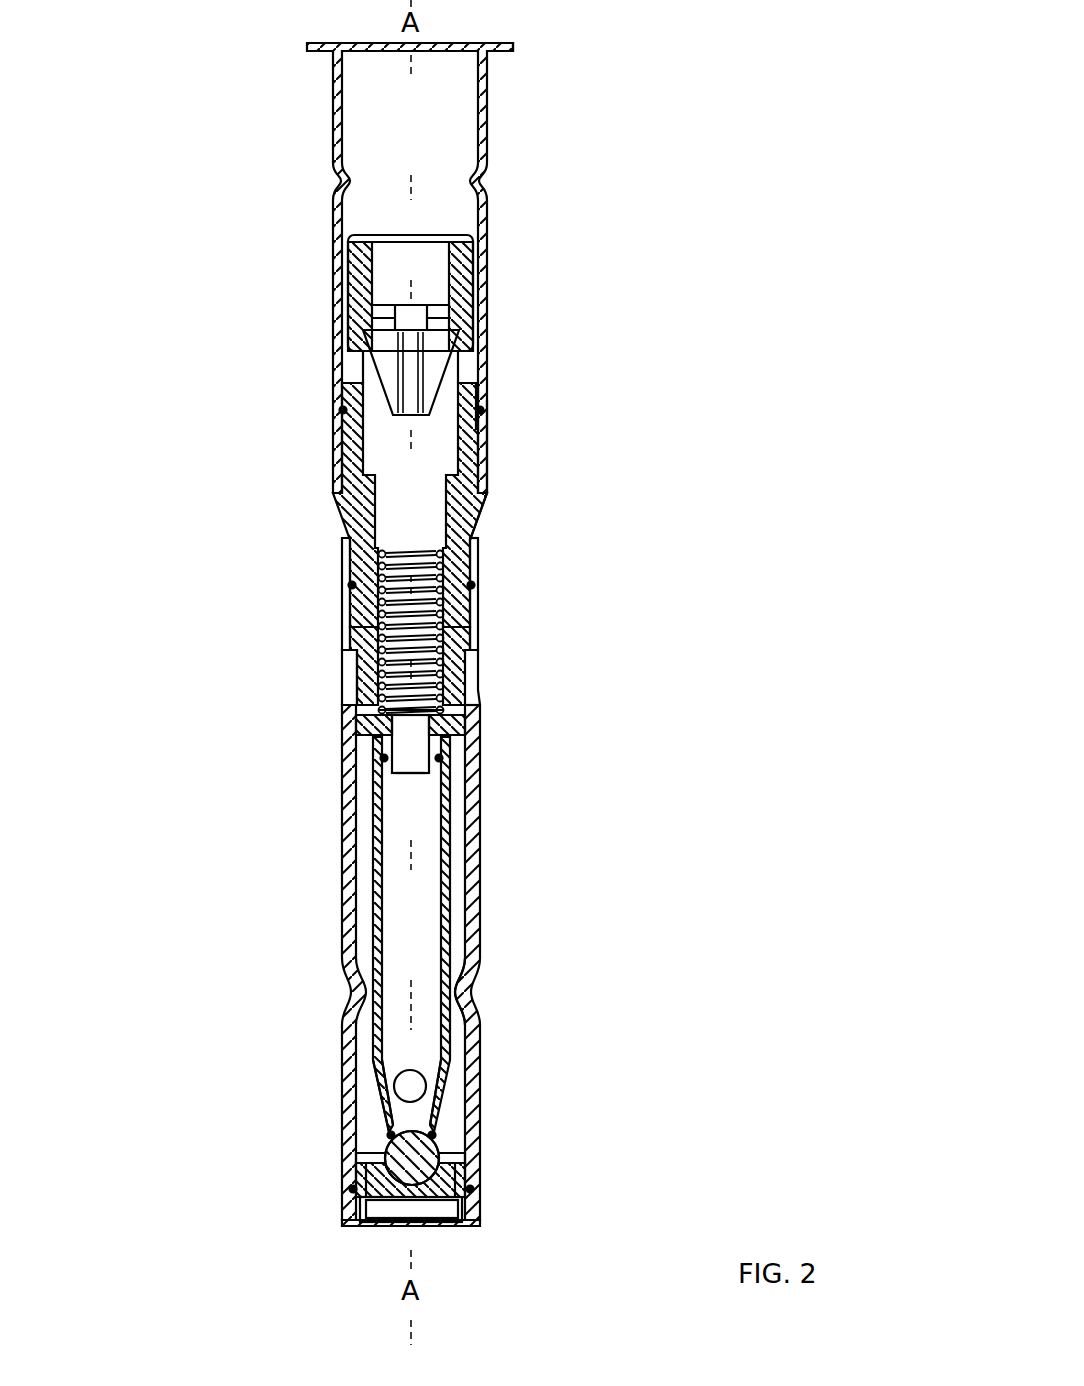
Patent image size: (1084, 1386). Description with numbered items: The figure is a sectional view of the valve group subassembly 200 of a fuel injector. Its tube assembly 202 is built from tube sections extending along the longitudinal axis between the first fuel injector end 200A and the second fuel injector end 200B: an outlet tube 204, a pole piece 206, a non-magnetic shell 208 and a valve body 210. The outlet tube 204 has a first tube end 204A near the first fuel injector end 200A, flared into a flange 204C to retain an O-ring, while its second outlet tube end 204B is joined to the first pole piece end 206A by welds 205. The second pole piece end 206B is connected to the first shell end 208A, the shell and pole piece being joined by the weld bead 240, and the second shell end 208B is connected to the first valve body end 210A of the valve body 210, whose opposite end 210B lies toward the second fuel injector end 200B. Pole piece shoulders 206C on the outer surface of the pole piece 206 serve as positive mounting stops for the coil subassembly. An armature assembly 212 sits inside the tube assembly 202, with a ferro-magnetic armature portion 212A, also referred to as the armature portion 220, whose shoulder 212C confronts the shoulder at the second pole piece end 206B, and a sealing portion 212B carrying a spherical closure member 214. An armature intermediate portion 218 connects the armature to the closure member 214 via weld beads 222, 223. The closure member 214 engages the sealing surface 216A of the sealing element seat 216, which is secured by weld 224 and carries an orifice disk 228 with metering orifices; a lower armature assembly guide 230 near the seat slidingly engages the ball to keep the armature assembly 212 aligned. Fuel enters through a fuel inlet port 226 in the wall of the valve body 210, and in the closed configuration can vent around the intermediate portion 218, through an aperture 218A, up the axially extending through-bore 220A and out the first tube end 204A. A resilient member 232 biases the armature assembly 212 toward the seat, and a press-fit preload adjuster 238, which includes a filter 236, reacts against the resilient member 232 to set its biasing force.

The valve group subassembly 200 is at (712, 276).
The first fuel injector end 200A is at (476, 40).
The second fuel injector end 200B is at (464, 1236).
The tube assembly 202 is at (336, 492).
The outlet tube 204 is at (492, 146).
The first tube end 204A is at (345, 29).
The second outlet tube end 204B is at (492, 446).
The flange 204C is at (527, 56).
The welds 205 is at (482, 410).
The pole piece 206 is at (492, 476).
The first pole piece end 206A is at (492, 386).
The second pole piece end 206B is at (460, 636).
The pole piece shoulders 206C is at (476, 526).
The non-magnetic shell 208 is at (479, 582).
The first shell end 208A is at (487, 546).
The second shell end 208B is at (482, 692).
The valve body 210 is at (487, 900).
The first valve body end 210A is at (487, 713).
The lower end of lower tube 210B is at (484, 1216).
The armature assembly 212 is at (366, 822).
The armature portion 212A is at (462, 732).
The sealing portion 212B is at (434, 1156).
The shoulder 212C is at (464, 660).
The closure member 214 is at (476, 1176).
The sealing element seat 216 is at (360, 1172).
The sealing surface 216A is at (366, 1192).
The armature intermediate portion 218 is at (449, 1066).
The aperture 218A is at (428, 1096).
The armature portion 220 is at (458, 716).
The through-bore 220A is at (416, 773).
The weld bead 222 is at (381, 758).
The weld bead 223 is at (392, 1148).
The weld 224 is at (468, 1190).
The fuel inlet port 226 is at (482, 985).
The orifice disk 228 is at (362, 1228).
The lower armature assembly guide 230 is at (470, 1152).
The resilient member 232 is at (352, 670).
The filter 236 is at (437, 357).
The preload adjuster 238 is at (362, 371).
The weld bead 240 is at (352, 585).